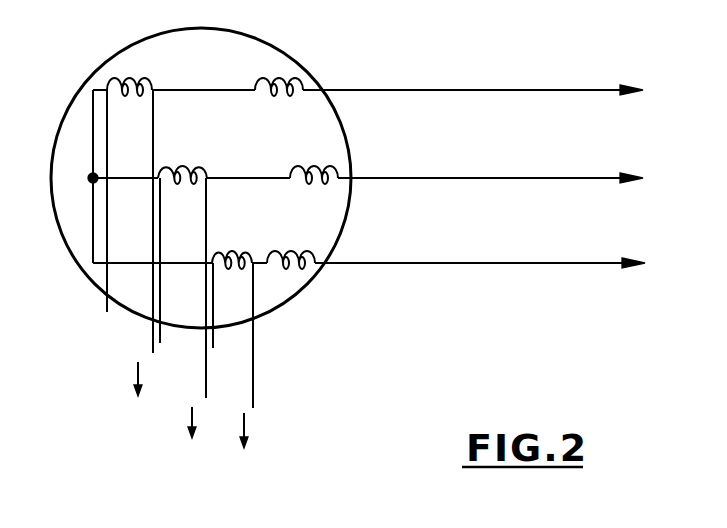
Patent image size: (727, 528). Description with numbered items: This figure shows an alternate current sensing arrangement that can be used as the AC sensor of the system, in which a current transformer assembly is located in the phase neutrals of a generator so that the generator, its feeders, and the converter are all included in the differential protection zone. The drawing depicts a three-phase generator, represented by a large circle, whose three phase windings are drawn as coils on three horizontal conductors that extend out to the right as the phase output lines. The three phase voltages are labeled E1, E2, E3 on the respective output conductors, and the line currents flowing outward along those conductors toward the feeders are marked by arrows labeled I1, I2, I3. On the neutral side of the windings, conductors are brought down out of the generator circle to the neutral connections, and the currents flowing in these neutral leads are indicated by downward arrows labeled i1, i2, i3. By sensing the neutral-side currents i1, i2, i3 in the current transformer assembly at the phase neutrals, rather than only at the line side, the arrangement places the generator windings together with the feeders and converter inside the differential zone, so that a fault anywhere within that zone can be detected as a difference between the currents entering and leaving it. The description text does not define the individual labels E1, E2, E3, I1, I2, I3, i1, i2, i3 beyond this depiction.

The phase 1 source voltage E1 is at (296, 77).
The phase 2 source voltage E2 is at (296, 166).
The phase 3 source voltage E3 is at (291, 250).
The phase 1 line current I1 is at (575, 74).
The phase 2 line current I2 is at (575, 163).
The phase 3 line current I3 is at (562, 251).
The phase 1 winding current i1 is at (233, 355).
The phase 2 winding current i2 is at (183, 308).
The phase 3 winding current i3 is at (130, 243).